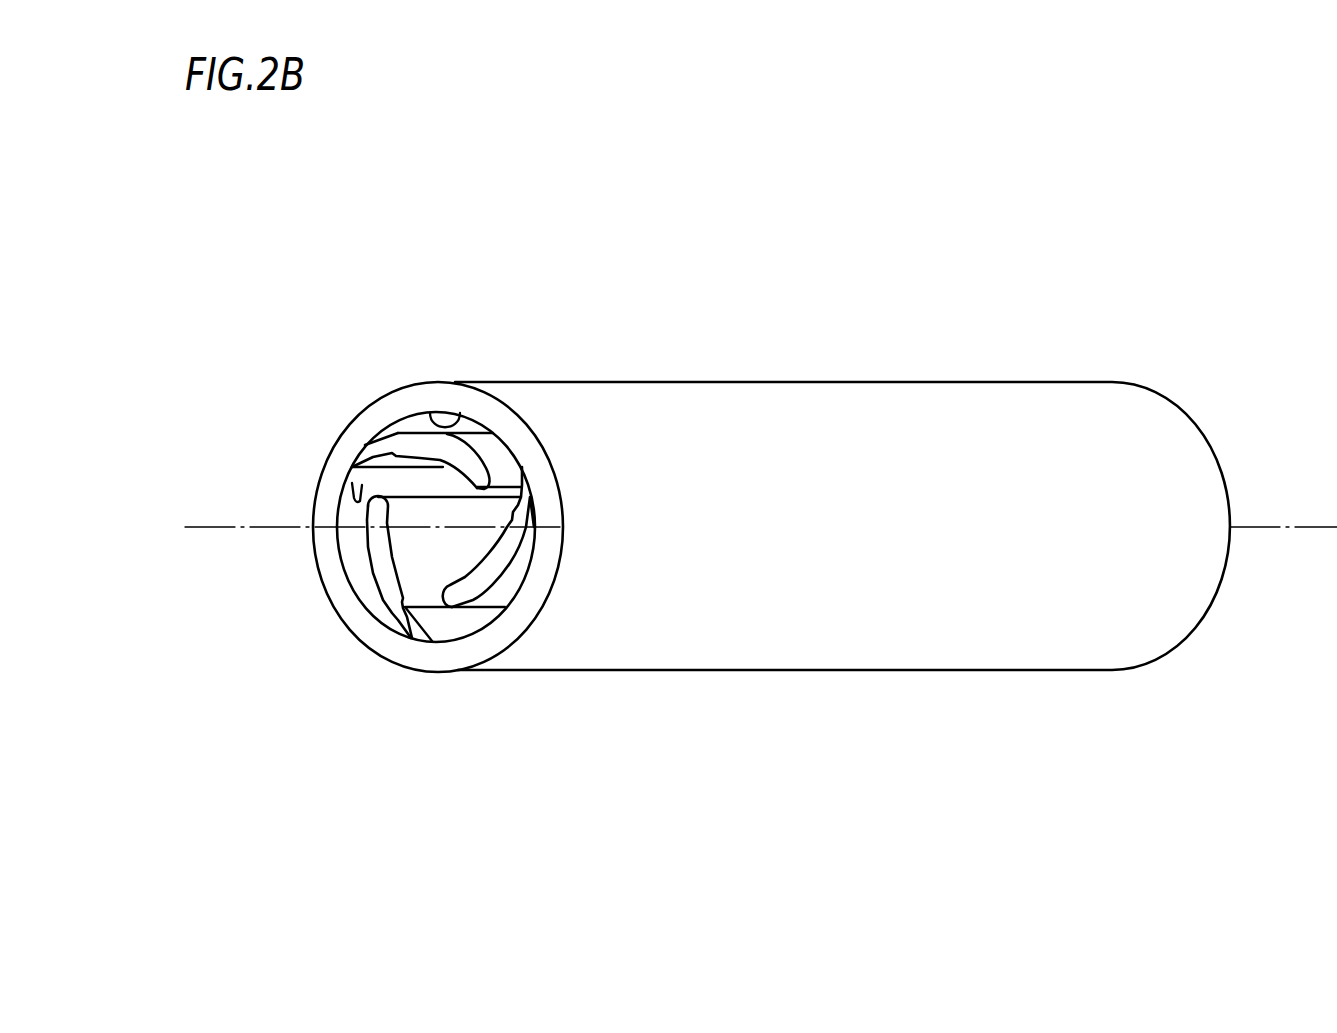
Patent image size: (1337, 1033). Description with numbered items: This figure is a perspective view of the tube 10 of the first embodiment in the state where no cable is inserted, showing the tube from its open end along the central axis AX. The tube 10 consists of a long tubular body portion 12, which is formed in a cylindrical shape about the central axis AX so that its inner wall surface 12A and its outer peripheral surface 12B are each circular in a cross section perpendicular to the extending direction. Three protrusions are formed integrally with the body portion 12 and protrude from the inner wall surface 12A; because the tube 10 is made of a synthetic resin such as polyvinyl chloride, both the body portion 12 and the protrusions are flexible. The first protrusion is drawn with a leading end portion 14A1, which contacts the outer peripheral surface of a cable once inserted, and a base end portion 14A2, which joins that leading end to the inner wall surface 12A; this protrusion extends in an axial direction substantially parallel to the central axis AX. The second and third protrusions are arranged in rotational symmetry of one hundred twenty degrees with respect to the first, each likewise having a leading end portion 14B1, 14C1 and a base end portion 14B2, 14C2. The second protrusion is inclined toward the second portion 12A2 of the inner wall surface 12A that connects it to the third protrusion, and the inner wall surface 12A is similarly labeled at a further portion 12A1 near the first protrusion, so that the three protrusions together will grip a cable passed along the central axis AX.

The tube 10 is at (735, 529).
The body portion 12 is at (681, 483).
The inner wall surface 12A is at (296, 404).
The first groove 12A1 is at (340, 492).
The second portion of the inner wall surface 12A2 is at (443, 428).
The outer peripheral surface 12B is at (847, 428).
The leading end portion 14A1 is at (388, 595).
The base end portion 14A2 is at (405, 622).
The leading end portion 14B1 is at (401, 435).
The base end portion 14B2 is at (435, 453).
The leading end portion 14C1 is at (472, 580).
The base end portion 14C2 is at (522, 507).
The central axis AX is at (222, 527).